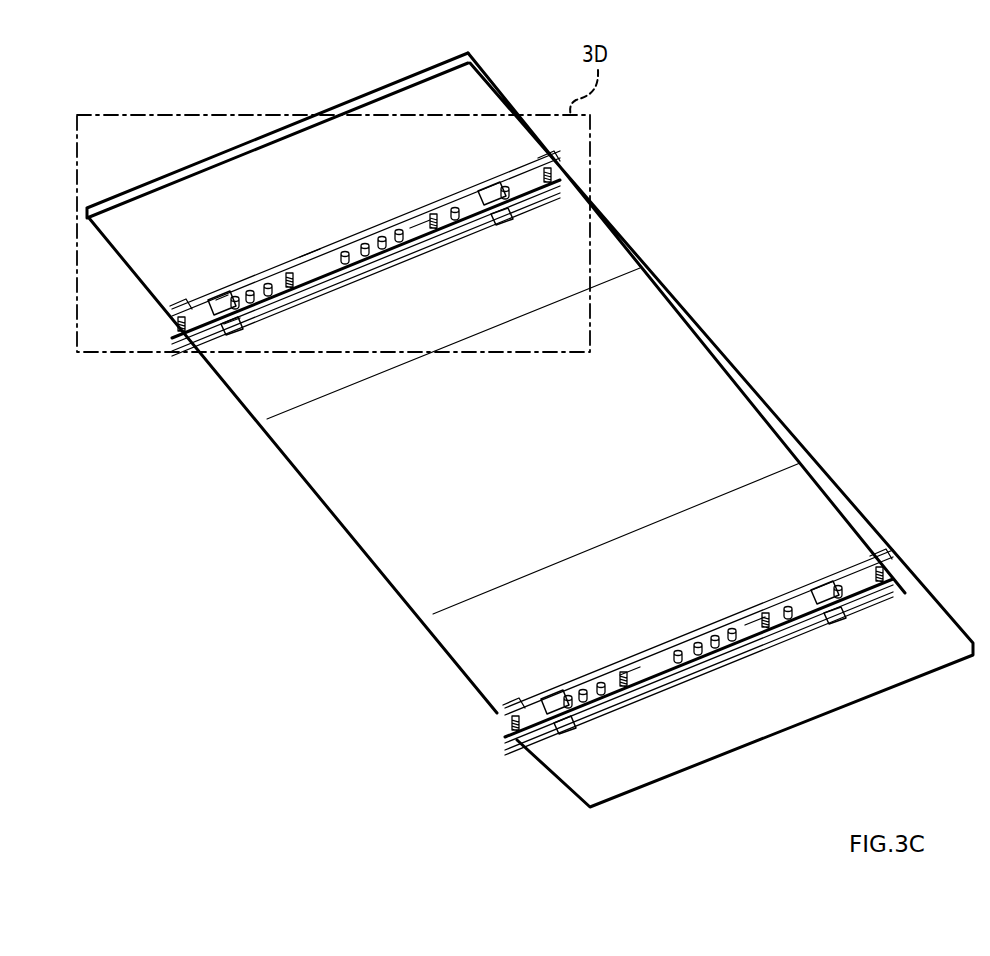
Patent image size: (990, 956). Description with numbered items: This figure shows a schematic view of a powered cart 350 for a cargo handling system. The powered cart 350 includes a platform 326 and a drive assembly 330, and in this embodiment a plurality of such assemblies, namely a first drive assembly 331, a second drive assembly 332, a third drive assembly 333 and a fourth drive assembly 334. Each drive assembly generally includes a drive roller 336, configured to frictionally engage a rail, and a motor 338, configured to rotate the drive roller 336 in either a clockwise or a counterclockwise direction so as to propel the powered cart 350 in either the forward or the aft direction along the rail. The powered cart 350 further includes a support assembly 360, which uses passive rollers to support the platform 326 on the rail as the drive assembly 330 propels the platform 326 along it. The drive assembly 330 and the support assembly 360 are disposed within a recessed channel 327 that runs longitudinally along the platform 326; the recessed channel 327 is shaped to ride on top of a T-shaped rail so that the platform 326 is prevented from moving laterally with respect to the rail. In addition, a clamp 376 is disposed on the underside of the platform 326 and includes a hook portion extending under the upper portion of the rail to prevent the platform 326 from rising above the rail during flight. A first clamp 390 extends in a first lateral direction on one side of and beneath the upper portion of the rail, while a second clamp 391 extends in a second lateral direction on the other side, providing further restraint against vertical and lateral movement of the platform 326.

The powered cart 350 is at (792, 188).
The platform 326 is at (748, 376).
The recessed channel 327 is at (546, 165).
The drive assembly 330 is at (534, 190).
The first drive assembly 331 is at (563, 209).
The second drive assembly 332 is at (190, 330).
The third drive assembly 333 is at (311, 273).
The fourth drive assembly 334 is at (425, 225).
The drive roller 336 is at (548, 172).
The motor 338 is at (541, 160).
The support assembly 360 is at (241, 243).
The clamp 376 is at (216, 300).
The first clamp 390 is at (231, 320).
The second clamp 391 is at (221, 296).